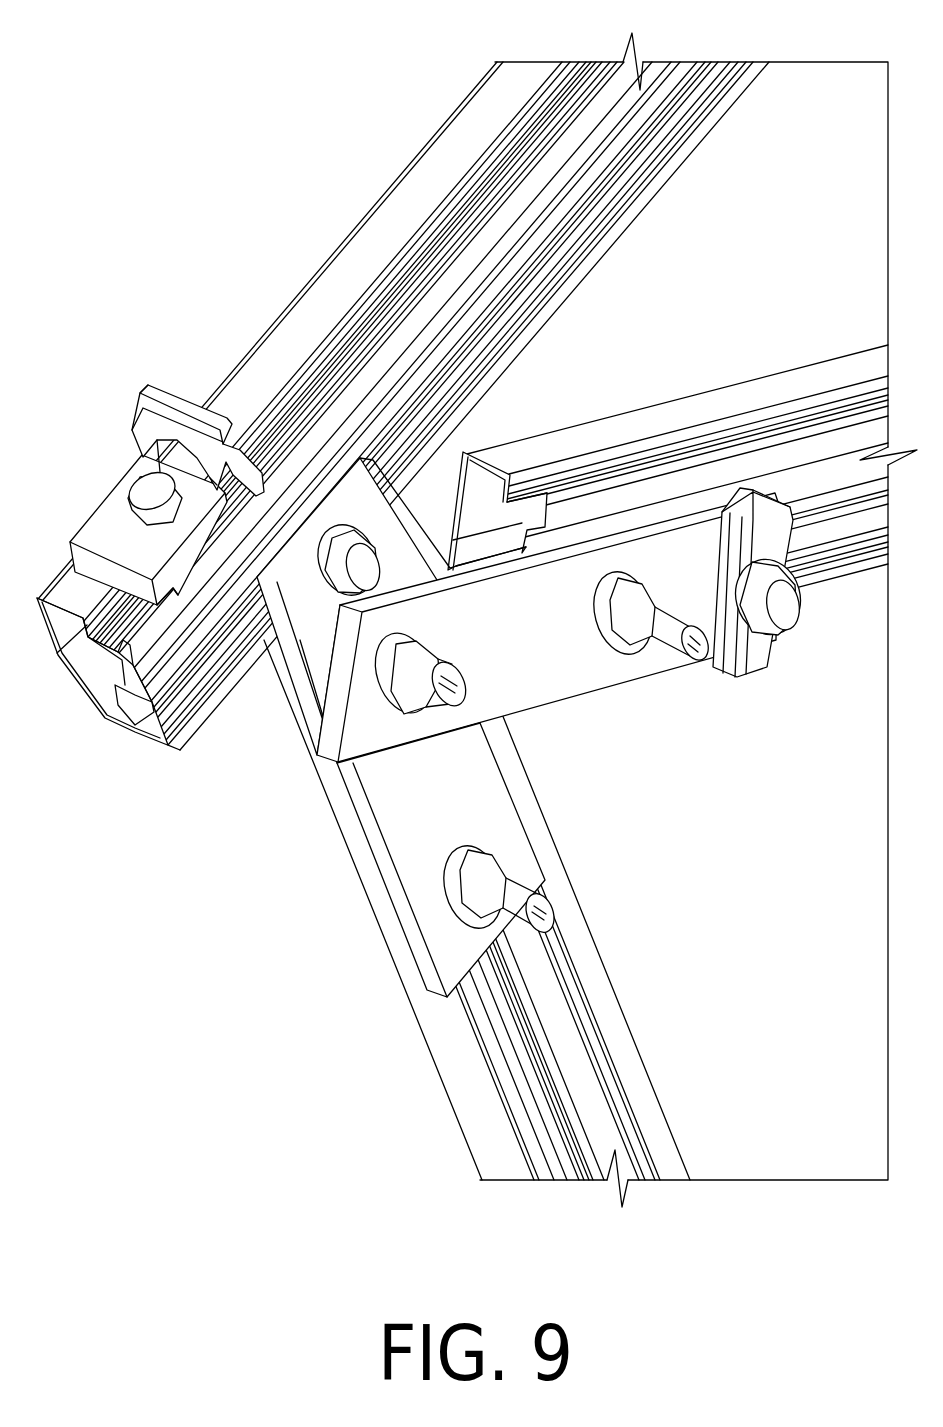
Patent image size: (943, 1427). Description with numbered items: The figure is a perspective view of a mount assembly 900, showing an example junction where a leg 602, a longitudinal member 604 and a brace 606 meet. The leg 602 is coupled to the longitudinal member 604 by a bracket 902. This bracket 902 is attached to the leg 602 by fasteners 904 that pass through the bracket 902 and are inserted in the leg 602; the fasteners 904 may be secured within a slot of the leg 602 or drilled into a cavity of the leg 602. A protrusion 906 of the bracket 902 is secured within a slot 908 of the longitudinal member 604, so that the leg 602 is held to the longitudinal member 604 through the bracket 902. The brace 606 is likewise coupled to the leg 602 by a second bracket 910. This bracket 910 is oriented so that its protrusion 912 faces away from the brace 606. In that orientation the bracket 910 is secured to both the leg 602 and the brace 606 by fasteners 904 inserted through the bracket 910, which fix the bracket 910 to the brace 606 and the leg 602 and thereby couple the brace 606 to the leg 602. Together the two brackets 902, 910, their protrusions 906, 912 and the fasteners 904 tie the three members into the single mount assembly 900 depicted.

The mount assembly 900 is at (790, 38).
The leg 602 is at (483, 1122).
The longitudinal member 604 is at (427, 168).
The brace 606 is at (713, 390).
The bracket 902 is at (397, 847).
The fasteners 904 is at (550, 900).
The protrusion 906 is at (263, 607).
The slot 908 is at (160, 723).
The bracket 910 is at (582, 692).
The protrusion 912 is at (748, 668).